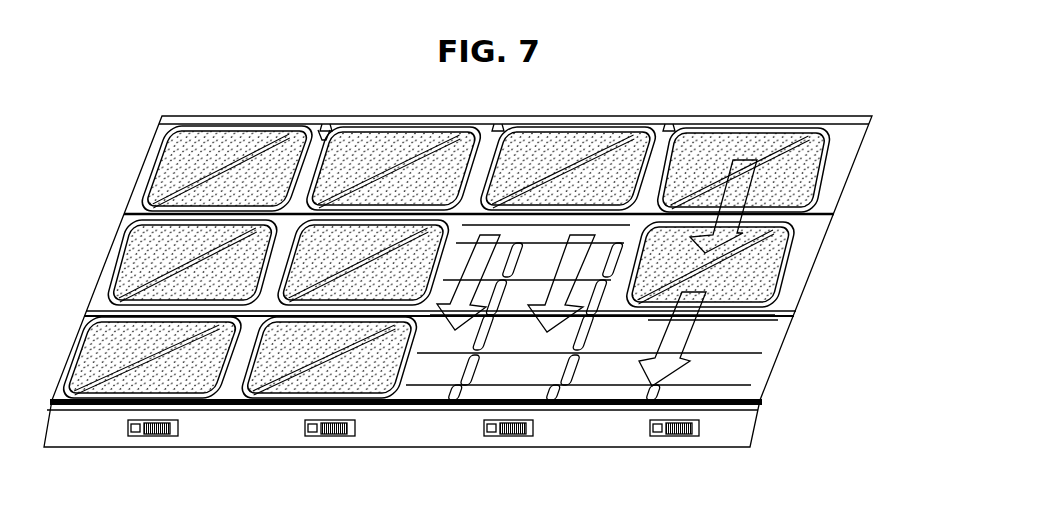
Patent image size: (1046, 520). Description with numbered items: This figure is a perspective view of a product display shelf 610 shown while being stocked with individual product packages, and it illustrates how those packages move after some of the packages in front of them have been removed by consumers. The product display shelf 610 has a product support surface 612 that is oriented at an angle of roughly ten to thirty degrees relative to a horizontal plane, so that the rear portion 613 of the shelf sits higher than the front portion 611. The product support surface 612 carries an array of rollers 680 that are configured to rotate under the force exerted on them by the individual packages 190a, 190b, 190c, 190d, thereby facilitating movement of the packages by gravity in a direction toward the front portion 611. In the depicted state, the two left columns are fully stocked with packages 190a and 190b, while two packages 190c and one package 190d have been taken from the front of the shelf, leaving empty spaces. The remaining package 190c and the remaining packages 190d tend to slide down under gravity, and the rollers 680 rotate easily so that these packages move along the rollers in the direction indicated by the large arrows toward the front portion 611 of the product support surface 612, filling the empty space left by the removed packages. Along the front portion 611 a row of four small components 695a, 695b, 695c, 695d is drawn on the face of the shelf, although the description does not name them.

The product display shelf 610 is at (108, 114).
The front portion 611 is at (223, 407).
The product support surface 612 is at (598, 374).
The rear portion 613 is at (334, 125).
The rollers 680 is at (742, 337).
The individual package 190a is at (203, 155).
The individual package 190b is at (377, 153).
The individual package 190c is at (547, 145).
The individual package 190d is at (717, 153).
The connector 695a is at (173, 428).
The connector 695b is at (353, 428).
The connector 695c is at (528, 430).
The connector 695d is at (696, 426).